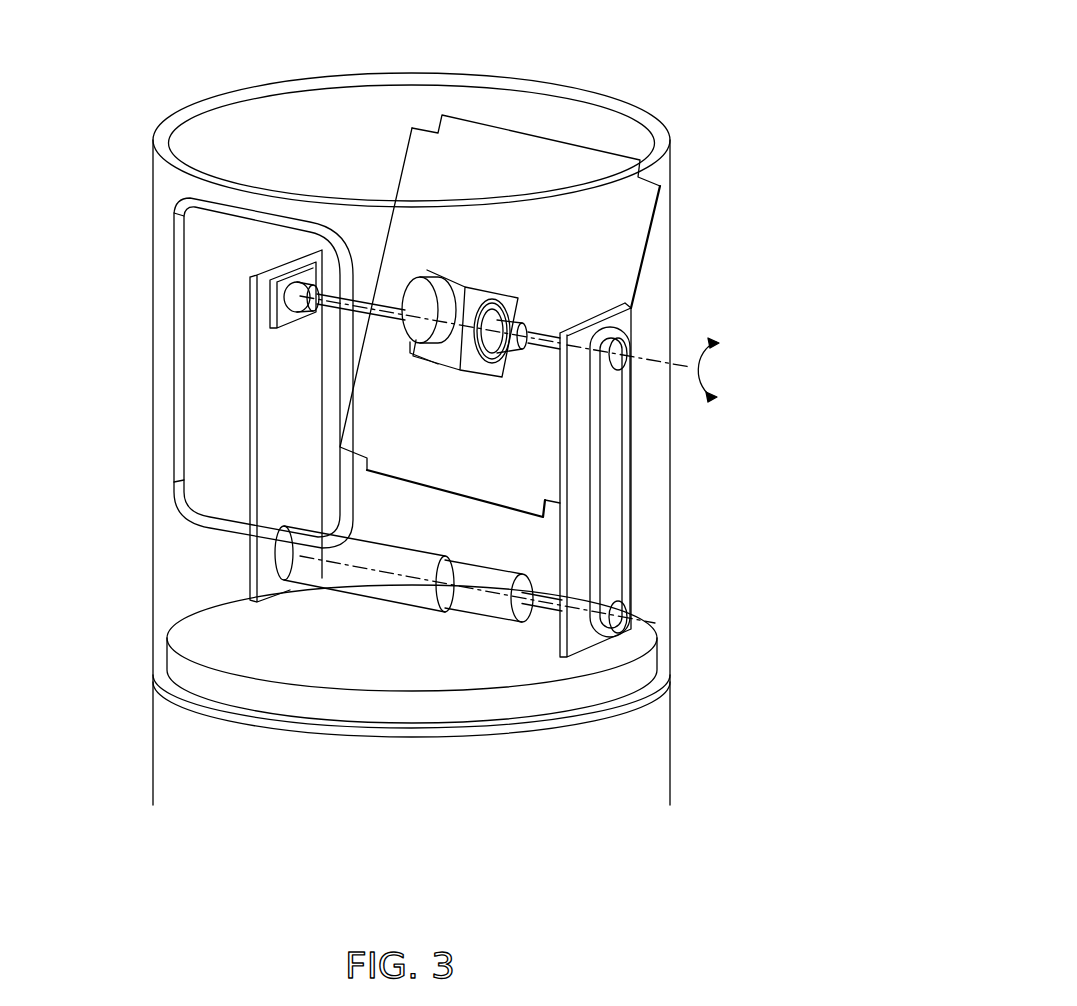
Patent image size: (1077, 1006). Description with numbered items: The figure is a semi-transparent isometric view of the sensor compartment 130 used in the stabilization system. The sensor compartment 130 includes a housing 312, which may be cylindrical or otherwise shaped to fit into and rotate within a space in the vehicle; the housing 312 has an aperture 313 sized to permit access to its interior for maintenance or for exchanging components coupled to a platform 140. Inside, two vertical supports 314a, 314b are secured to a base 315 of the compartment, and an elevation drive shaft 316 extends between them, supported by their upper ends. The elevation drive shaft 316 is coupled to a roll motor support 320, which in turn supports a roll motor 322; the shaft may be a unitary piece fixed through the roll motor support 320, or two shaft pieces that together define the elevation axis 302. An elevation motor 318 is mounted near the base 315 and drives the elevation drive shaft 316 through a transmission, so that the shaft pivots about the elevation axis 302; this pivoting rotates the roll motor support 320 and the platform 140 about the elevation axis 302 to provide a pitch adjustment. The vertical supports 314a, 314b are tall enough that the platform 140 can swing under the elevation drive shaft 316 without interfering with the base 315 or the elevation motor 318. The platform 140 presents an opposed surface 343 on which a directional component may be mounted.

The sensor compartment 130 is at (664, 46).
The platform 140 is at (662, 212).
The elevation axis 302 is at (690, 368).
The housing 312 is at (153, 460).
The aperture 313 is at (172, 201).
The vertical support 314a is at (250, 375).
The vertical support 314b is at (562, 445).
The base 315 is at (473, 668).
The elevation drive shaft 316 is at (321, 280).
The elevation motor 318 is at (340, 582).
The roll motor support 320 is at (470, 275).
The roll motor 322 is at (443, 360).
The opposed surface 343 is at (425, 464).